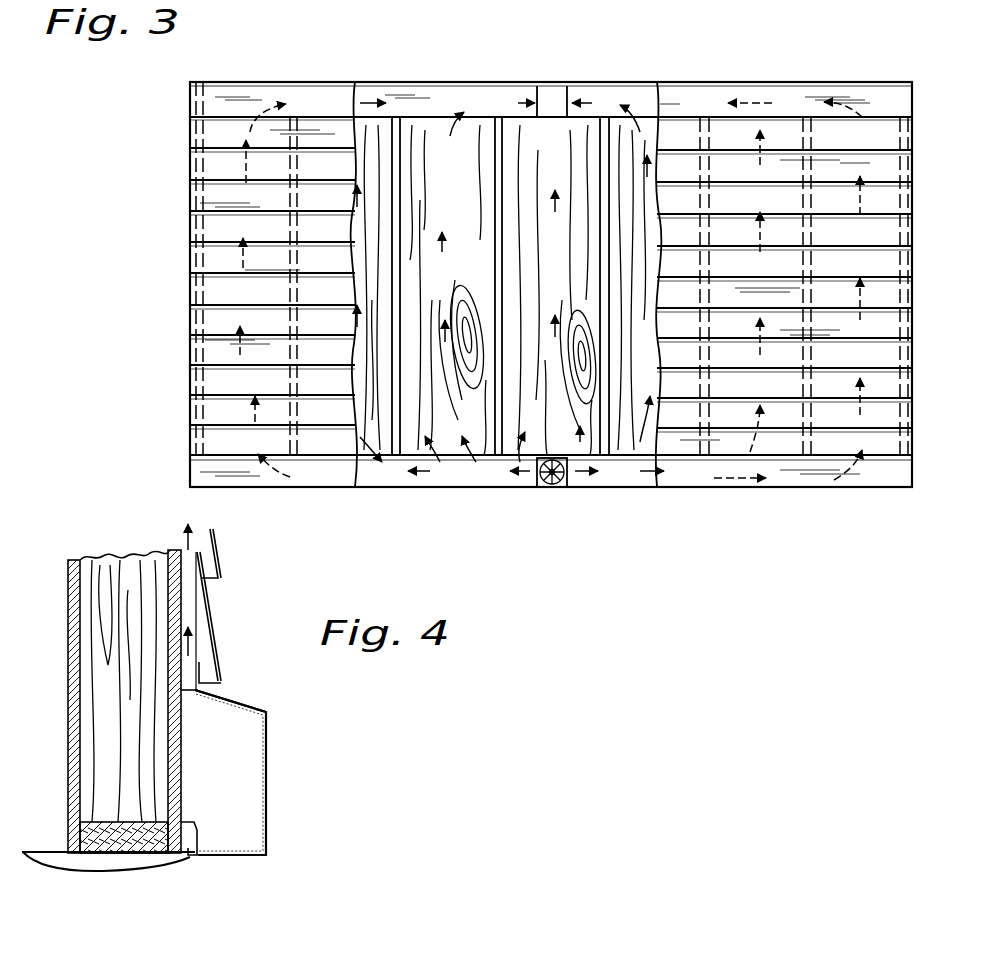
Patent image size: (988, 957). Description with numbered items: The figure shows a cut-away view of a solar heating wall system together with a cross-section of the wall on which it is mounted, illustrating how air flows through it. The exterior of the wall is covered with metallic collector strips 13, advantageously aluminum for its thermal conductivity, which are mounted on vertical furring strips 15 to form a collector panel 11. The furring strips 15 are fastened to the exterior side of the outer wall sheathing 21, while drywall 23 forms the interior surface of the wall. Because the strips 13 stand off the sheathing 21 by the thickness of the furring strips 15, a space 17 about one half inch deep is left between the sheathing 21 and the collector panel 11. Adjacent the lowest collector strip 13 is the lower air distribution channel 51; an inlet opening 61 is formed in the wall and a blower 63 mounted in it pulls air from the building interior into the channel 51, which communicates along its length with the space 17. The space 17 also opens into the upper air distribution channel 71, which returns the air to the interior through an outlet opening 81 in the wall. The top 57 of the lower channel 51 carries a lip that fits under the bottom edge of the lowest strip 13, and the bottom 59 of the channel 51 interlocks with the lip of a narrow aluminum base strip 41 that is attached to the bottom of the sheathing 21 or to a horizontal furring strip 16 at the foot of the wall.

In FIG. 3, the collector panel 11 is at (206, 234).
In FIG. 3, the metallic collector strip 13 is at (210, 320).
In FIG. 4, the metallic collector strip 13 is at (214, 560).
In FIG. 3, the vertical furring strip 15 is at (500, 205).
In FIG. 4, the horizontal furring strip 16 is at (181, 853).
In FIG. 4, the space 17 is at (190, 616).
In FIG. 4, the outer wall sheathing 21 is at (172, 552).
In FIG. 4, the drywall 23 is at (78, 560).
In FIG. 4, the base strip 41 is at (192, 849).
In FIG. 3, the lower air distribution channel 51 is at (802, 482).
In FIG. 4, the lower air distribution channel 51 is at (276, 739).
In FIG. 4, the top of the lower channel 57 is at (246, 696).
In FIG. 4, the bottom of the lower channel 59 is at (226, 858).
In FIG. 3, the inlet opening 61 is at (566, 489).
In FIG. 3, the blower 63 is at (540, 489).
In FIG. 3, the upper air distribution channel 71 is at (800, 110).
In FIG. 3, the outlet opening 81 is at (553, 96).